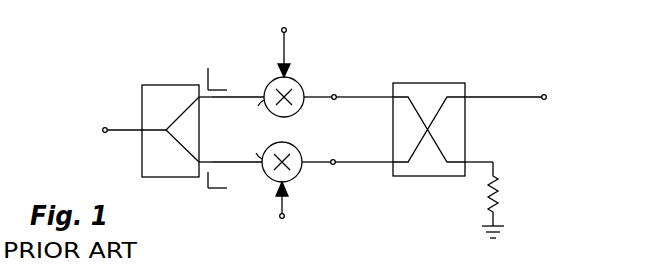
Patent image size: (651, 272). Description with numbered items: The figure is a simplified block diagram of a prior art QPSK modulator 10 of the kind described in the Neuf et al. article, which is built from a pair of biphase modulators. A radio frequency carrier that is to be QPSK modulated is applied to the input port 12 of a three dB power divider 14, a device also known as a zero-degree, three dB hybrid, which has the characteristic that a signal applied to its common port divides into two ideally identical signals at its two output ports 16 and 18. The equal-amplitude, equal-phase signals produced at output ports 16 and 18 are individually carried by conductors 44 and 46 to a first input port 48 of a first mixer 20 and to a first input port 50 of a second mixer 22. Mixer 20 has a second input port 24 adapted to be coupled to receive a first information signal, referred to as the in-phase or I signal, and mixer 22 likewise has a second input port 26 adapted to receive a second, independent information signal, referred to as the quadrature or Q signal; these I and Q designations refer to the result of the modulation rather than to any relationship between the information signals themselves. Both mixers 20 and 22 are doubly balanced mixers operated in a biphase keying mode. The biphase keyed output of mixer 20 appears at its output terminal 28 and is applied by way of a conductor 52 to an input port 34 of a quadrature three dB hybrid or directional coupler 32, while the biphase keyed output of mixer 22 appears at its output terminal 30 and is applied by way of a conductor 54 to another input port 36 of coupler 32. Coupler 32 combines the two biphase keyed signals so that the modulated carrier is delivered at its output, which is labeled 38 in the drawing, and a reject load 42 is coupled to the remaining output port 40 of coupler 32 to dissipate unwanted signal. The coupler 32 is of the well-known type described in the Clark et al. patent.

The modulator 10 is at (516, 149).
The input port 12 is at (105, 132).
The 3 dB power divider 14 is at (170, 85).
The output port 16 is at (200, 99).
The output port 18 is at (200, 161).
The first mixer 20 is at (296, 83).
The second mixer 22 is at (298, 151).
The second input port 24 is at (281, 30).
The second input port 26 is at (279, 218).
The output terminal 28 is at (335, 94).
The output terminal 30 is at (335, 160).
The quadrature 3 dB hybrid 32 is at (430, 83).
The input port 34 is at (386, 95).
The input port 36 is at (386, 165).
The modulated carrier output port 38 is at (466, 96).
The output port 40 is at (466, 161).
The reject load 42 is at (500, 193).
The conductor 44 is at (243, 95).
The conductor 46 is at (265, 170).
The first input port 48 is at (264, 105).
The first input port 50 is at (263, 157).
The conductor 52 is at (348, 99).
The conductor 54 is at (358, 165).